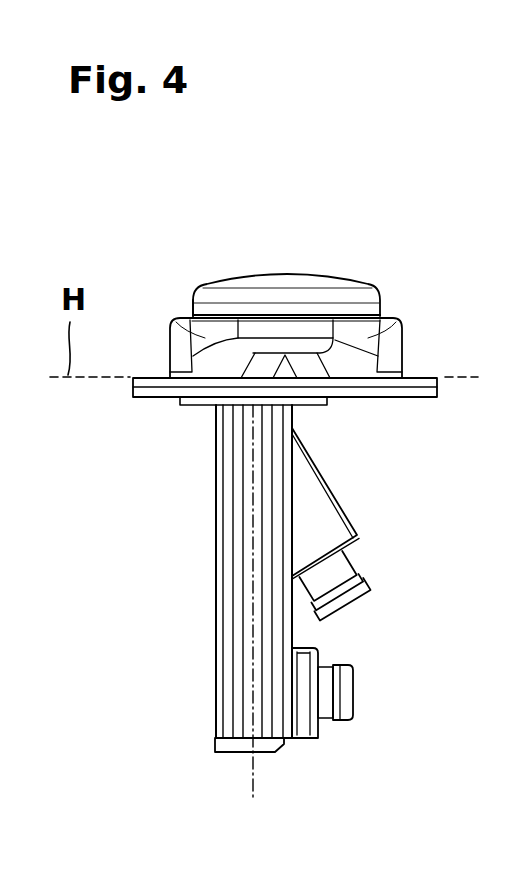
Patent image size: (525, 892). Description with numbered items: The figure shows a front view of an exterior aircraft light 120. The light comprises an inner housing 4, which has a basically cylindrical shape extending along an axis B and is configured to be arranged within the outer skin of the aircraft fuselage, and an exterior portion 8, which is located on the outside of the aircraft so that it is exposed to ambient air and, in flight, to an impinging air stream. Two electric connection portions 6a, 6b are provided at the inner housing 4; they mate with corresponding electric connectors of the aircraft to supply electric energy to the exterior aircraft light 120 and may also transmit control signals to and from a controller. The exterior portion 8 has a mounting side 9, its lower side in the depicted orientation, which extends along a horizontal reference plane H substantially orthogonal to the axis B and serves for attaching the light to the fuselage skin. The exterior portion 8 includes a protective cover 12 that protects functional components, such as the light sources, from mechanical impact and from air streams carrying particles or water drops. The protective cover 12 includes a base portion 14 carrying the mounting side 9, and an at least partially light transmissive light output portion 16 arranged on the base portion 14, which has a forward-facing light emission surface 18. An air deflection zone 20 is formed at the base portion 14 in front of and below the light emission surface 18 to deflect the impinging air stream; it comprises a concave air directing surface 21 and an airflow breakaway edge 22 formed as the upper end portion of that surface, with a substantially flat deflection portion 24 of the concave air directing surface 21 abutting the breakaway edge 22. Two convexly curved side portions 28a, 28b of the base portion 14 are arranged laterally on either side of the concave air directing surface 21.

The exterior portion 8 is at (456, 201).
The protective cover 12 is at (429, 275).
The light output portion 16 is at (373, 275).
The light emission surface 18 is at (272, 290).
The deflection portion 24 is at (303, 328).
The airflow breakaway edge 22 is at (225, 314).
The base portion 14 is at (416, 343).
The convexly curved side portion 28a is at (200, 333).
The convexly curved side portion 28b is at (372, 331).
The air deflection zone 20 is at (261, 327).
The concave air directing surface 21 is at (248, 347).
The mounting side 9 is at (415, 409).
The inner housing 4 is at (188, 615).
The exterior aircraft light 120 is at (187, 678).
The electric connection portion 6a is at (371, 557).
The electric connection portion 6b is at (368, 693).